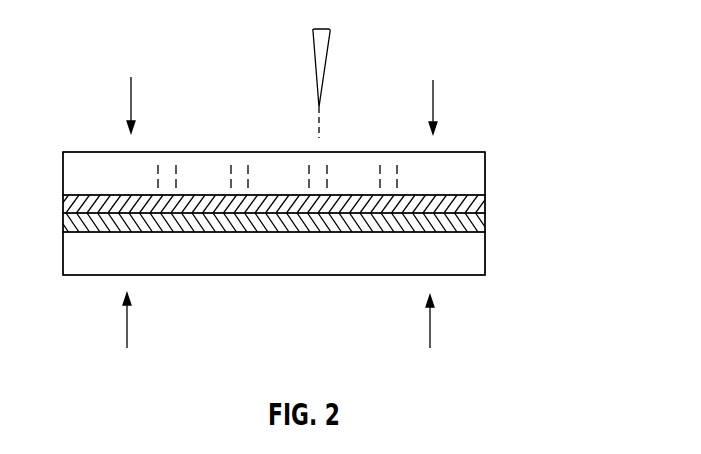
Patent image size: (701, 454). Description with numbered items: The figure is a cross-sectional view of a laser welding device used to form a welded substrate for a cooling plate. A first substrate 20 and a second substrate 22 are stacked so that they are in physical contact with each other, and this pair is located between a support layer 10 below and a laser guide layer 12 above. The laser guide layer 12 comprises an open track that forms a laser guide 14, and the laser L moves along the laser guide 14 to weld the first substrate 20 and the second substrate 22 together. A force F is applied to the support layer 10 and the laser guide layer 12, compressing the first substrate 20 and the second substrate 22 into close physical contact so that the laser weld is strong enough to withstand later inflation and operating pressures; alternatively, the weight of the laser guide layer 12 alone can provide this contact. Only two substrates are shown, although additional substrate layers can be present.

The support layer 10 is at (478, 257).
The laser guide layer 12 is at (482, 164).
The laser guide 14 is at (168, 152).
The first substrate 20 is at (478, 218).
The second substrate 22 is at (484, 204).
The laser L is at (323, 44).
The force F is at (131, 90).